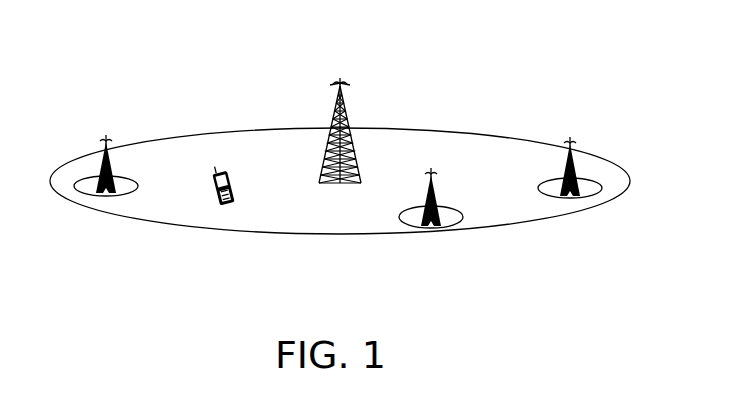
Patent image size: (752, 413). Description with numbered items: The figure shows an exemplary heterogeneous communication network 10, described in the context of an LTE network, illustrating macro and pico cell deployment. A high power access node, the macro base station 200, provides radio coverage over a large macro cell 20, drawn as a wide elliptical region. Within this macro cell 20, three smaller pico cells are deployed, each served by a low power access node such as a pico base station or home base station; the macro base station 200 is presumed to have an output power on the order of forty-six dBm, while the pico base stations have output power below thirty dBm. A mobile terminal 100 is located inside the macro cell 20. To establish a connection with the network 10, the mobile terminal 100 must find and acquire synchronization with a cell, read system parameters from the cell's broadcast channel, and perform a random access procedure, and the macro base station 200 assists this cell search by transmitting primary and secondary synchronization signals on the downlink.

The heterogeneous communication network 10 is at (448, 40).
The macro cell 20 is at (220, 234).
The mobile terminal 100 is at (222, 171).
The macro base station 200 is at (336, 110).